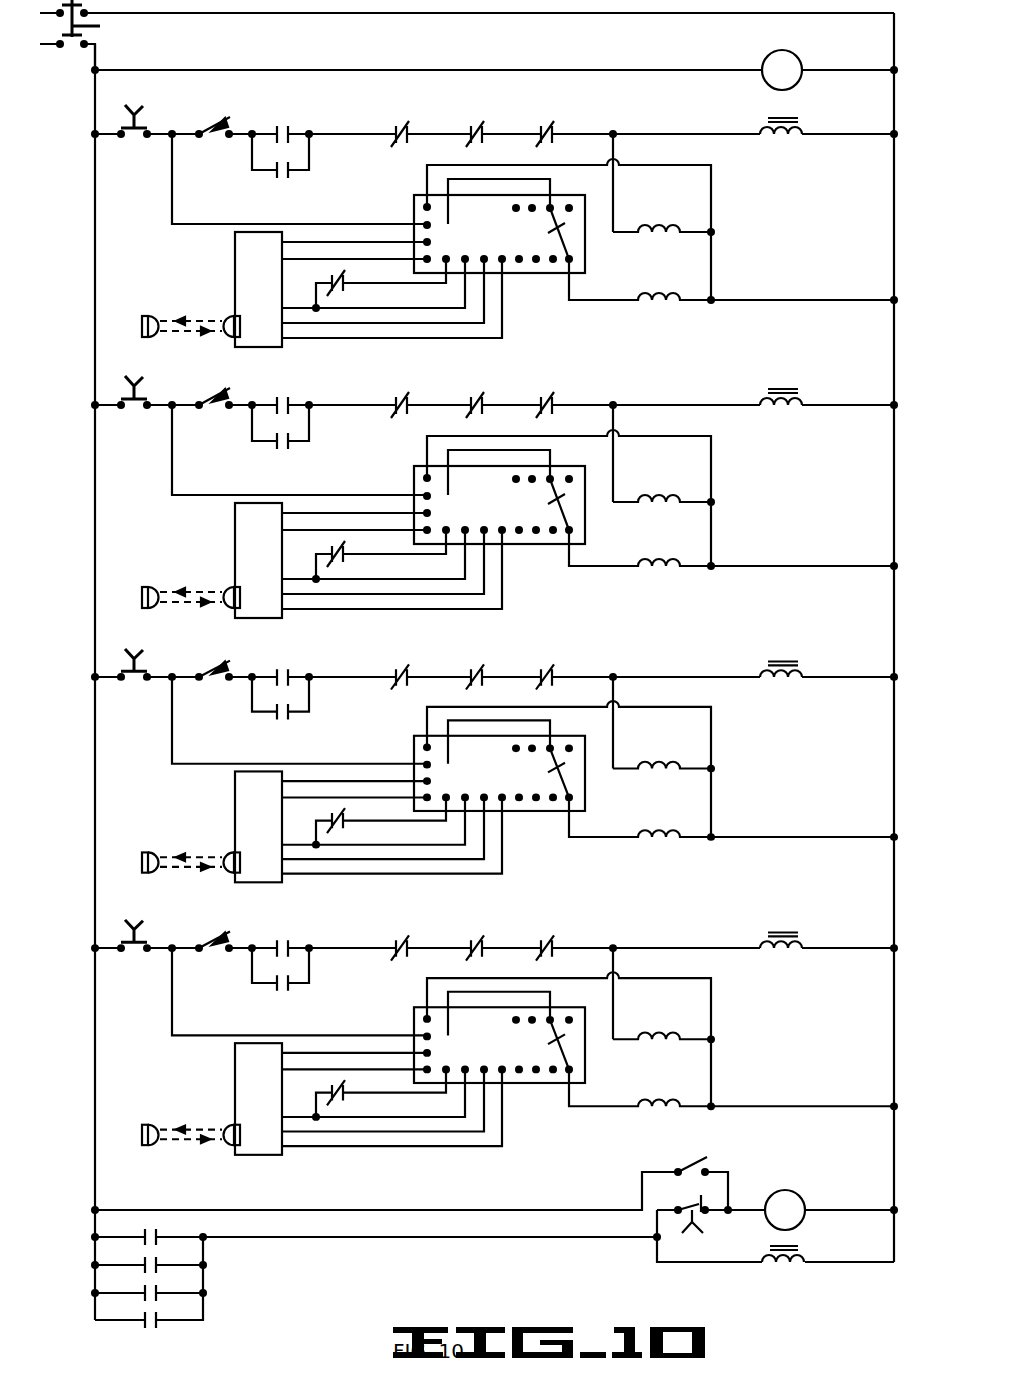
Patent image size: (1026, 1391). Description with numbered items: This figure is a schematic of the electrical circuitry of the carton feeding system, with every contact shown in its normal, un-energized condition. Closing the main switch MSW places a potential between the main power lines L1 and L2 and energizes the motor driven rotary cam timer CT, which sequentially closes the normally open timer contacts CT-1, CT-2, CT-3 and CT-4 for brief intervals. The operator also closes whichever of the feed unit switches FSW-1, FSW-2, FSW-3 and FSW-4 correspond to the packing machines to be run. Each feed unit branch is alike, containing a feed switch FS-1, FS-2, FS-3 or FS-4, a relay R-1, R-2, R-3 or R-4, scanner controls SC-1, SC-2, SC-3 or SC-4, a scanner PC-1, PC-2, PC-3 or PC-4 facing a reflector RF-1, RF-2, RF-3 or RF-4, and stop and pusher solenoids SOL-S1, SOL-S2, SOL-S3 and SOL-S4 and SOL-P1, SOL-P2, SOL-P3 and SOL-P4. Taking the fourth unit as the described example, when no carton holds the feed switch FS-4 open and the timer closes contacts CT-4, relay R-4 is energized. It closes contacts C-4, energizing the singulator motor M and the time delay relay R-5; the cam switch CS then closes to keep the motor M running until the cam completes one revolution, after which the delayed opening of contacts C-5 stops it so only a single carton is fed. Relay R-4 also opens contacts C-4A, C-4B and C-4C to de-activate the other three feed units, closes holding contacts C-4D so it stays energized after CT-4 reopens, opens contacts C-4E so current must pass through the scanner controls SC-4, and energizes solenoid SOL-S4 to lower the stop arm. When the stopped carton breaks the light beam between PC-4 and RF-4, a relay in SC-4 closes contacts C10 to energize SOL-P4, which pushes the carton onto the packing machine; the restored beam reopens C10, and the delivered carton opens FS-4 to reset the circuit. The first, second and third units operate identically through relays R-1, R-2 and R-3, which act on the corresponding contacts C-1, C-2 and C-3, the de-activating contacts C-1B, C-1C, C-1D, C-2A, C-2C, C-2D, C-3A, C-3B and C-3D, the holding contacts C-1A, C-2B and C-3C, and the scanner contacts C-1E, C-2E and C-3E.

The main switch MSW is at (467, 35).
The main power line L1 is at (95, 92).
The main power line L2 is at (894, 47).
The rotary cam timer CT is at (793, 80).
The feed unit switch FSW-1 is at (155, 104).
The feed unit switch FSW-2 is at (155, 375).
The feed unit switch FSW-3 is at (155, 649).
The feed unit switch FSW-4 is at (155, 919).
The fill switch 1 FS-1 is at (210, 126).
The fill switch 2 FS-2 is at (190, 389).
The fill switch 3 FS-3 is at (190, 662).
The feed switch FS-4 is at (190, 933).
The timer contacts CT-1 is at (300, 114).
The timer contacts CT-2 is at (302, 389).
The timer contacts CT-3 is at (302, 662).
The timer contacts CT-4 is at (302, 933).
The relay C-1 contact A C-1A is at (275, 178).
The relay C-2 contact B C-2B is at (280, 442).
The relay C-3 contact C C-3C is at (280, 712).
The holding contacts C-4D is at (280, 984).
The relay C-2 contact A C-2A is at (419, 112).
The relay C-3 contact A C-3A is at (494, 112).
The contacts C-4A is at (564, 112).
The relay C-1 contact B C-1B is at (412, 389).
The relay C-3 contact B C-3B is at (487, 389).
The contacts C-4B is at (562, 389).
The relay C-1 contact C C-1C is at (412, 661).
The relay C-2 contact C C-2C is at (487, 661).
The contacts C-4C is at (562, 661).
The relay C-1 contact D C-1D is at (412, 933).
The relay C-2 contact D C-2D is at (487, 933).
The relay C-3 contact D C-3D is at (562, 933).
The relay C-1 contact E C-1E is at (350, 288).
The relay C-2 contact E C-2E is at (370, 560).
The relay C-3 contact E C-3E is at (370, 826).
The contacts C-4E is at (370, 1098).
The relay R-1 is at (800, 130).
The relay R-2 is at (802, 386).
The relay R-3 is at (802, 659).
The relay R-4 is at (802, 930).
The time delay relay R-5 is at (810, 1255).
The sequence controller 1 SC-1 is at (517, 248).
The sequence controller 2 SC-2 is at (499, 505).
The sequence controller 3 SC-3 is at (499, 773).
The scanner controls SC-4 is at (499, 1045).
The contacts C10 is at (576, 240).
The solenoid S1 SOL-S1 is at (662, 216).
The solenoid S2 SOL-S2 is at (662, 486).
The solenoid S3 SOL-S3 is at (662, 753).
The control solenoid SOL-S4 is at (662, 1024).
The solenoid P1 SOL-P1 is at (731, 279).
The solenoid P2 SOL-P2 is at (731, 548).
The solenoid P3 SOL-P3 is at (731, 817).
The solenoid SOL-P4 is at (731, 1087).
The photocell 1 PC-1 is at (235, 272).
The photocell 2 PC-2 is at (222, 560).
The photocell 3 PC-3 is at (222, 826).
The scanner PC-4 is at (222, 1099).
The reflector 1 RF-1 is at (148, 317).
The reflector 2 RF-2 is at (191, 582).
The reflector 3 RF-3 is at (191, 848).
The reflector RF-4 is at (191, 1120).
The cam switch CS is at (684, 1166).
The contacts C-5 is at (701, 1196).
The electric motor M is at (794, 1220).
The relay C-1 contact C-1 is at (143, 1230).
The relay C-2 contact C-2 is at (143, 1258).
The relay C-3 contact C-3 is at (143, 1286).
The contacts C-4 is at (140, 1328).